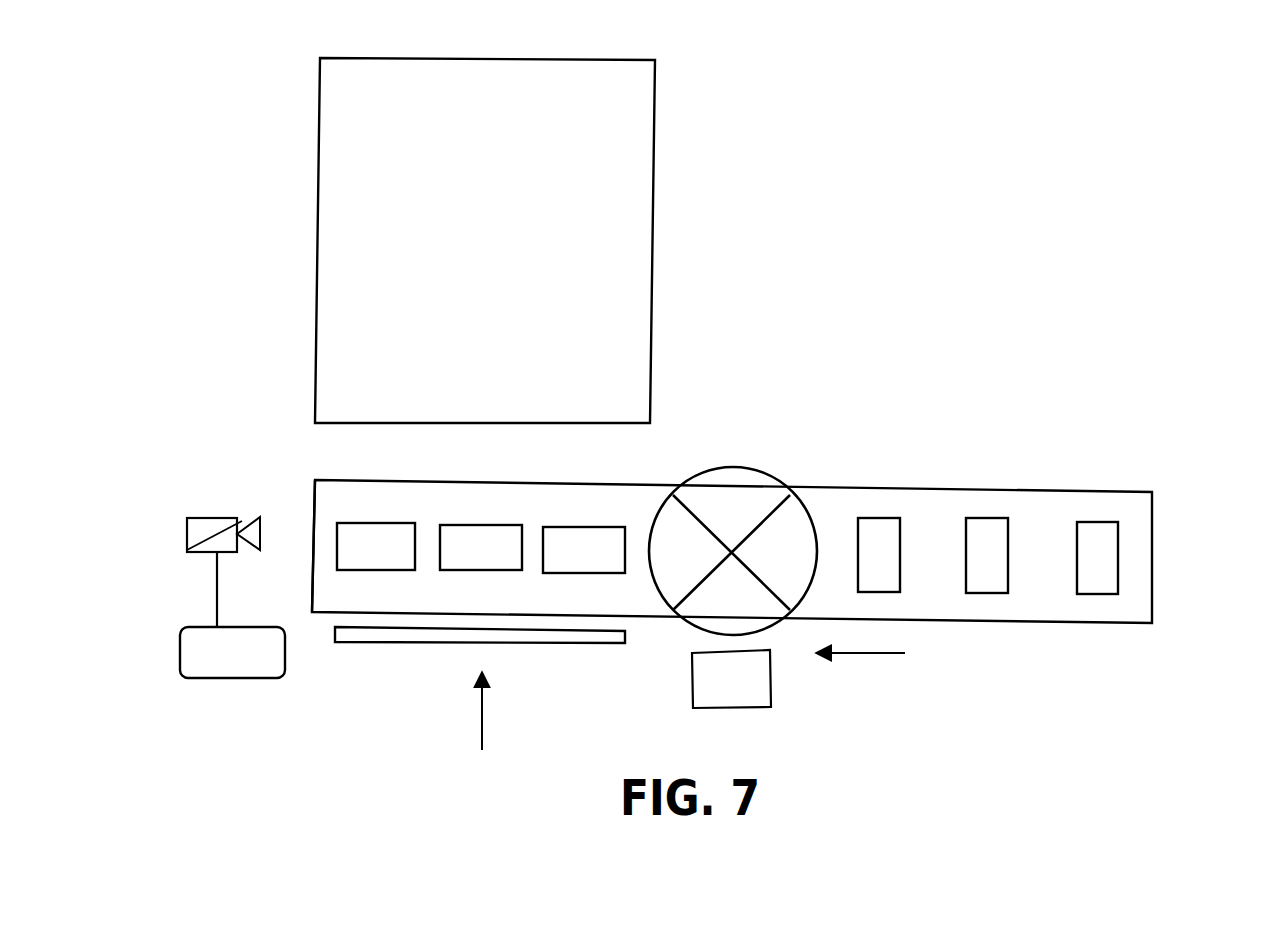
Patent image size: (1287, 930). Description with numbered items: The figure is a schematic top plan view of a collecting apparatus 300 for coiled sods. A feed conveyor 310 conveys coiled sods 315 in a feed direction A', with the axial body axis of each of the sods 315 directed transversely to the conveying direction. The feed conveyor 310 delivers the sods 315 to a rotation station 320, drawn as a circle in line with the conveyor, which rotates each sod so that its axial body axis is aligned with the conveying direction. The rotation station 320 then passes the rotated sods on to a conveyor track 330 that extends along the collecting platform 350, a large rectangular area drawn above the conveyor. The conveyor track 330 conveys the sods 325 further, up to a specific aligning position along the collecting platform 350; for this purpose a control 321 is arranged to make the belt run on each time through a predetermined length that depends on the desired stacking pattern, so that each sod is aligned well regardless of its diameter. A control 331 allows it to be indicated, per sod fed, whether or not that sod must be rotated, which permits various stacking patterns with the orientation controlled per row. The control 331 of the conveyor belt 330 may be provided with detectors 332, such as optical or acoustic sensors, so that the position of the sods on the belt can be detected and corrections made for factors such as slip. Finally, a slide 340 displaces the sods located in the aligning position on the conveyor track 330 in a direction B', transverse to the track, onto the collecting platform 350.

The collecting apparatus 300 is at (799, 216).
The feed conveyor 310 is at (1138, 517).
The coiled sods 315 is at (1095, 543).
The rotation station 320 is at (730, 490).
The control 321 is at (732, 618).
The sods 325 is at (588, 547).
The conveyor track 330 is at (327, 507).
The control 331 is at (322, 600).
The detectors 332 is at (192, 537).
The slide 340 is at (380, 651).
The collecting platform 350 is at (630, 292).